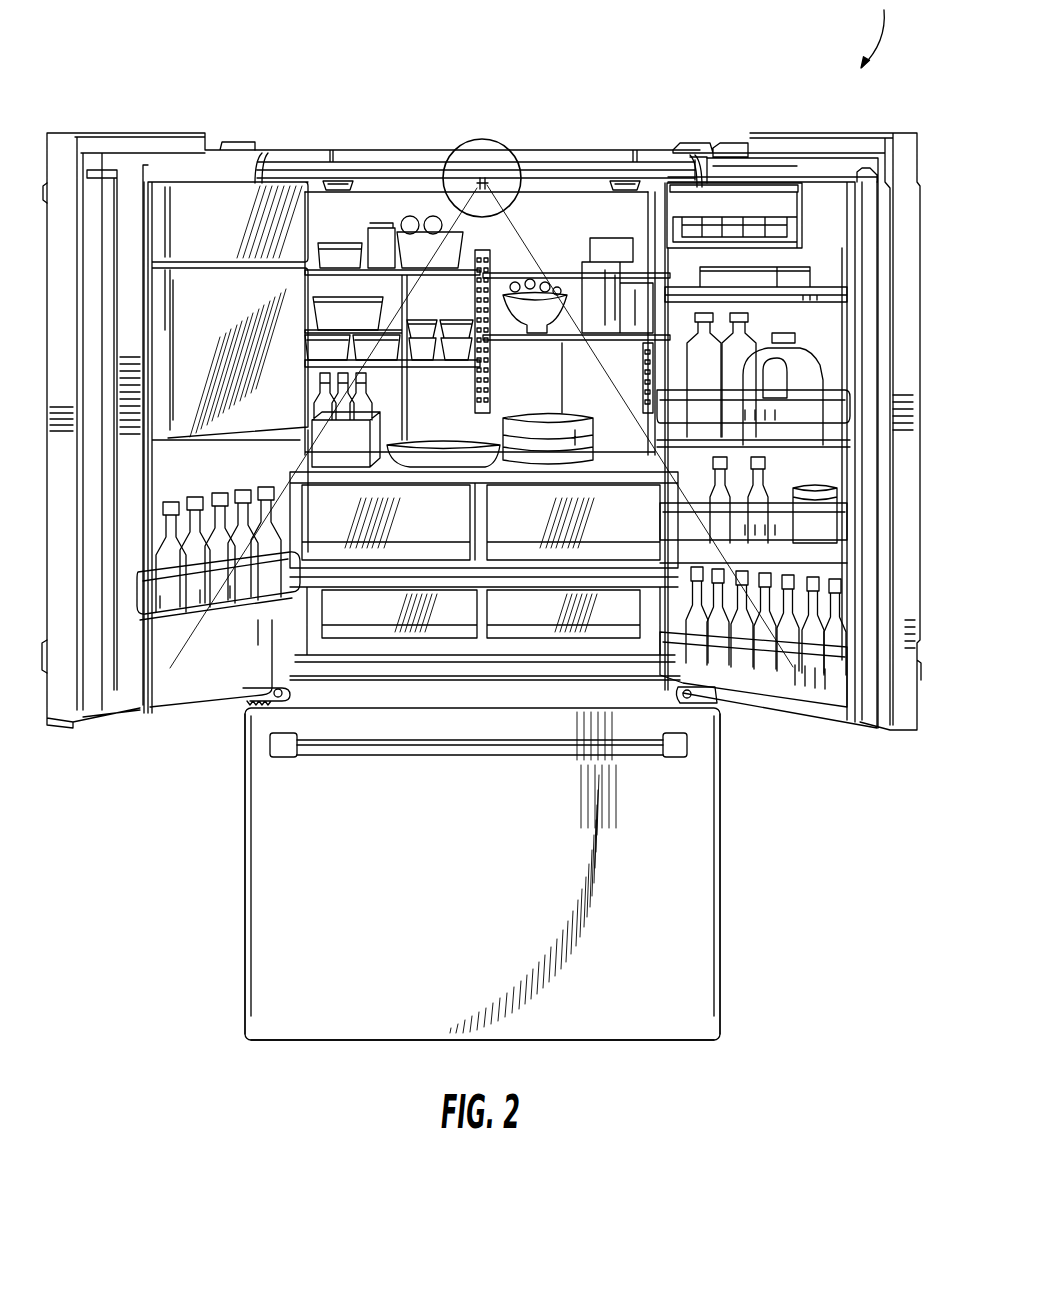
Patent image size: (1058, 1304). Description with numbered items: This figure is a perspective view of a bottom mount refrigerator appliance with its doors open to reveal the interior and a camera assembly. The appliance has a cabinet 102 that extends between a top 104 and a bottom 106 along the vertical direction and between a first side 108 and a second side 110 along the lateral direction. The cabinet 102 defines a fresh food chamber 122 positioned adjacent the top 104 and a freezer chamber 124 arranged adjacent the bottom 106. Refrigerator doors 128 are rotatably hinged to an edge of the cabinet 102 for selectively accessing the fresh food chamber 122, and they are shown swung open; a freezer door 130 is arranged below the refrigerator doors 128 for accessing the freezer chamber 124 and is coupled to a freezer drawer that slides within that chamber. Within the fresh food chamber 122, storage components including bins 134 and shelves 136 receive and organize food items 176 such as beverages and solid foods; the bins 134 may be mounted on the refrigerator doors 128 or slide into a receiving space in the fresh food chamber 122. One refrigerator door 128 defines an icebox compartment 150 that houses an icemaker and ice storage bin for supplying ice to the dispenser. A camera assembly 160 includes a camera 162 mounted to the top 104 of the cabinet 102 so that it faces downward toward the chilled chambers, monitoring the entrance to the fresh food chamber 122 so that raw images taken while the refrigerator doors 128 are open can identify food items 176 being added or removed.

The cabinet 102 is at (648, 157).
The top 104 is at (428, 147).
The bottom 106 is at (347, 1050).
The first side 108 is at (240, 1053).
The second side 110 is at (720, 1050).
The fresh food chamber 122 is at (578, 217).
The freezer chamber 124 is at (347, 852).
The refrigerator doors 128 is at (905, 527).
The freezer door 130 is at (503, 897).
The bins 134 is at (541, 526).
The shelves 136 is at (337, 263).
The icebox compartment 150 is at (208, 247).
The camera assembly 160 is at (493, 136).
The camera 162 is at (488, 184).
The food items 176 is at (380, 243).